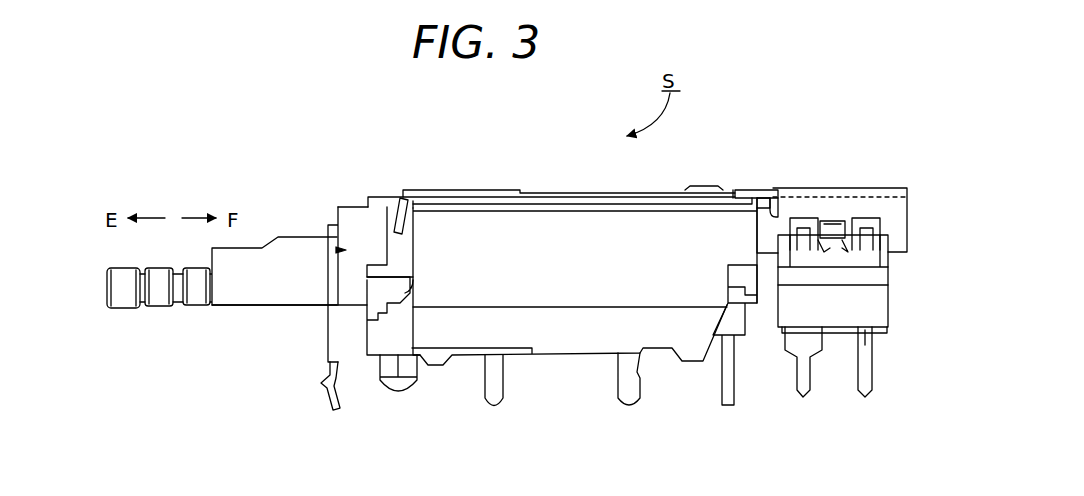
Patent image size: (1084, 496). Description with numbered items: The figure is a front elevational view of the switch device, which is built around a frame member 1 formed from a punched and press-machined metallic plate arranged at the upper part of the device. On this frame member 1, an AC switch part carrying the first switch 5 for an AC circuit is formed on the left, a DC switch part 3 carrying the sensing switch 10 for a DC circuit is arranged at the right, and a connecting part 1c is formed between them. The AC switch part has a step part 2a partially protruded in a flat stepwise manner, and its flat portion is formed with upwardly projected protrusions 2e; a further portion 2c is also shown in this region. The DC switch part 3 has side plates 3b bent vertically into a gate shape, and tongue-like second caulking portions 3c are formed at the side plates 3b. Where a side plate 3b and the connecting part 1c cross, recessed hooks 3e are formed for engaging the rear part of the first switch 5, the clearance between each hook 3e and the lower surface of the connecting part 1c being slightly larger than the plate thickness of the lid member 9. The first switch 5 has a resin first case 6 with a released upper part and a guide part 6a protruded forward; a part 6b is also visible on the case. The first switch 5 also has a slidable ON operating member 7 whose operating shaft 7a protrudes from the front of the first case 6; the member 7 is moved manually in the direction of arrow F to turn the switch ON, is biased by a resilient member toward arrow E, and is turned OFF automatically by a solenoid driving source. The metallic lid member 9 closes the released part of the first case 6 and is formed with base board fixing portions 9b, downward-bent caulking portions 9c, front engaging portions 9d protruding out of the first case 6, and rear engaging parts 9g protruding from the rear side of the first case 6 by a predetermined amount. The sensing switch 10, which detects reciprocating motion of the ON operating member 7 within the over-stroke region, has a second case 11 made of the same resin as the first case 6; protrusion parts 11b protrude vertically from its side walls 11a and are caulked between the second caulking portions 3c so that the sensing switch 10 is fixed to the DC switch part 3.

The frame member 1 is at (544, 186).
The connecting part 1c is at (750, 190).
The step part 2a is at (428, 192).
The guide block 2c is at (398, 228).
The protrusions 2e is at (697, 187).
The DC switch part 3 is at (821, 185).
The side plates 3b is at (880, 208).
The second caulking portions 3c is at (822, 252).
The hooks 3e is at (777, 203).
The first switch 5 is at (563, 358).
The first case 6 is at (491, 279).
The guide part 6a is at (350, 318).
The mounting pin 6b is at (393, 340).
The ON operating member 7 is at (250, 285).
The operating shaft 7a is at (157, 310).
The lid member 9 is at (459, 199).
The base board fixing portions 9b is at (323, 385).
The caulking portions 9c is at (390, 293).
The front engaging portions 9d is at (388, 210).
The rear engaging parts 9g is at (761, 203).
The sensing switch 10 is at (838, 340).
The second case 11 is at (857, 300).
The side walls 11a is at (868, 252).
The protrusion parts 11b is at (830, 227).